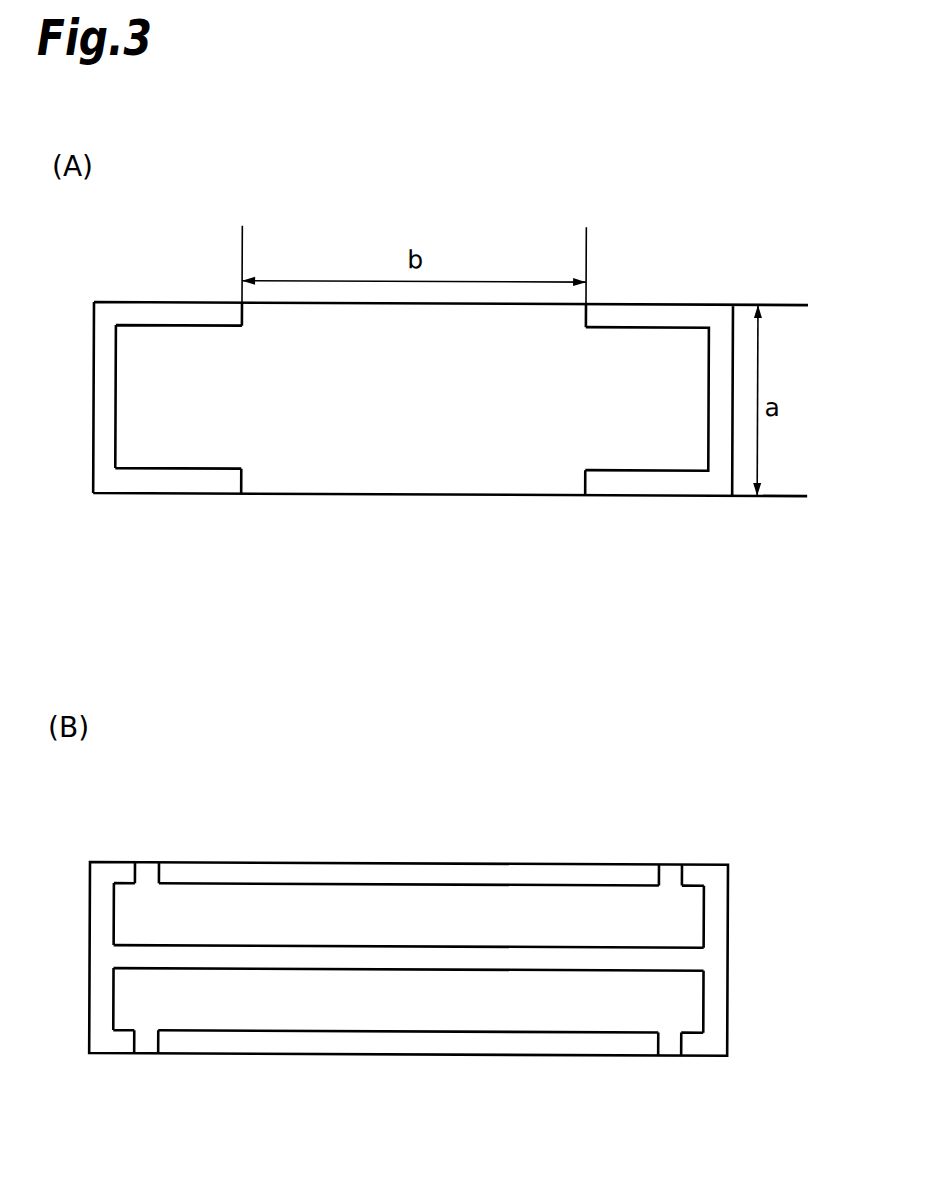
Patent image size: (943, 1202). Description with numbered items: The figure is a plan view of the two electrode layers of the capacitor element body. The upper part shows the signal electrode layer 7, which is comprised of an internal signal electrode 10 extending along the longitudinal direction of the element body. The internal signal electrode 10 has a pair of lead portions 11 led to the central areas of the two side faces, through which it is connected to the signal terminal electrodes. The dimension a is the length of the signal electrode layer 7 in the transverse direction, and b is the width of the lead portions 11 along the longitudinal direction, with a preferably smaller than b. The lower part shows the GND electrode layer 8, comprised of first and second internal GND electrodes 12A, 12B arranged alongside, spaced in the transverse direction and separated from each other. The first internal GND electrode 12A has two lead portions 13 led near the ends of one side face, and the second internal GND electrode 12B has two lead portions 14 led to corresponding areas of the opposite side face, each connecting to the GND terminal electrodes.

The signal electrode layer 7 is at (649, 352).
The GND electrode layer 8 is at (482, 958).
The internal signal electrode 10 is at (657, 343).
The lead portions 11 is at (250, 313).
The first internal GND electrode 12A is at (697, 920).
The second internal GND electrode 12B is at (697, 1008).
The lead portions 13 is at (147, 868).
The lead portions 14 is at (142, 1043).